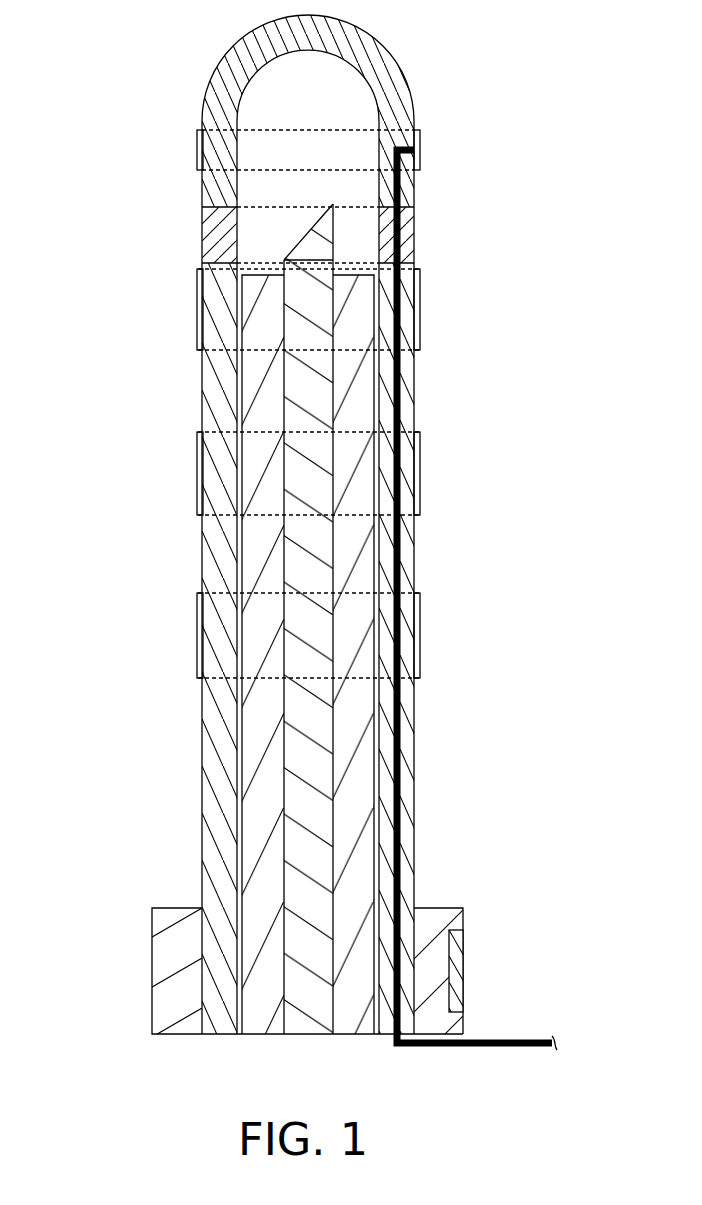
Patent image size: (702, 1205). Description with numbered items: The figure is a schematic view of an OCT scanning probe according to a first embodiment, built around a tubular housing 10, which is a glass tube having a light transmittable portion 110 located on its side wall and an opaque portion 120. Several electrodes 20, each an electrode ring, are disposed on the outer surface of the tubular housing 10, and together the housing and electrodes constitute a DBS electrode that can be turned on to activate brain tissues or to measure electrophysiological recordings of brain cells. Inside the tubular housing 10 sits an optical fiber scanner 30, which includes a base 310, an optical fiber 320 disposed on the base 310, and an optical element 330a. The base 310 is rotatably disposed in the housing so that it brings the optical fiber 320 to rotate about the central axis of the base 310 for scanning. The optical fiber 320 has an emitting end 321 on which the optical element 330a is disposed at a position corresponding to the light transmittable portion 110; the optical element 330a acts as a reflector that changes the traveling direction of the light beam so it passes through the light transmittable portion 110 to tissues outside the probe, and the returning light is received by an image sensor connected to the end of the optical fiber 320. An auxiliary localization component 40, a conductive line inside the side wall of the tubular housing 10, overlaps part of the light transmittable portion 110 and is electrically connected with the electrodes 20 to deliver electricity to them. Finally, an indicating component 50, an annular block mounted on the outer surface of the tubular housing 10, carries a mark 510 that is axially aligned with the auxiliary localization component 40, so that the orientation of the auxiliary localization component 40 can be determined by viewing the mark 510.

The tubular housing 10 is at (366, 524).
The electrode 20 is at (418, 140).
The optical fiber scanner 30 is at (108, 205).
The auxiliary localization component 40 is at (400, 806).
The indicating component 50 is at (440, 922).
The light transmittable portion 110 is at (413, 235).
The opaque portion 120 is at (408, 187).
The base 310 is at (267, 427).
The optical fiber 320 is at (295, 343).
The emitting end 321 is at (300, 255).
The optical element 330a is at (315, 240).
The mark 510 is at (462, 983).